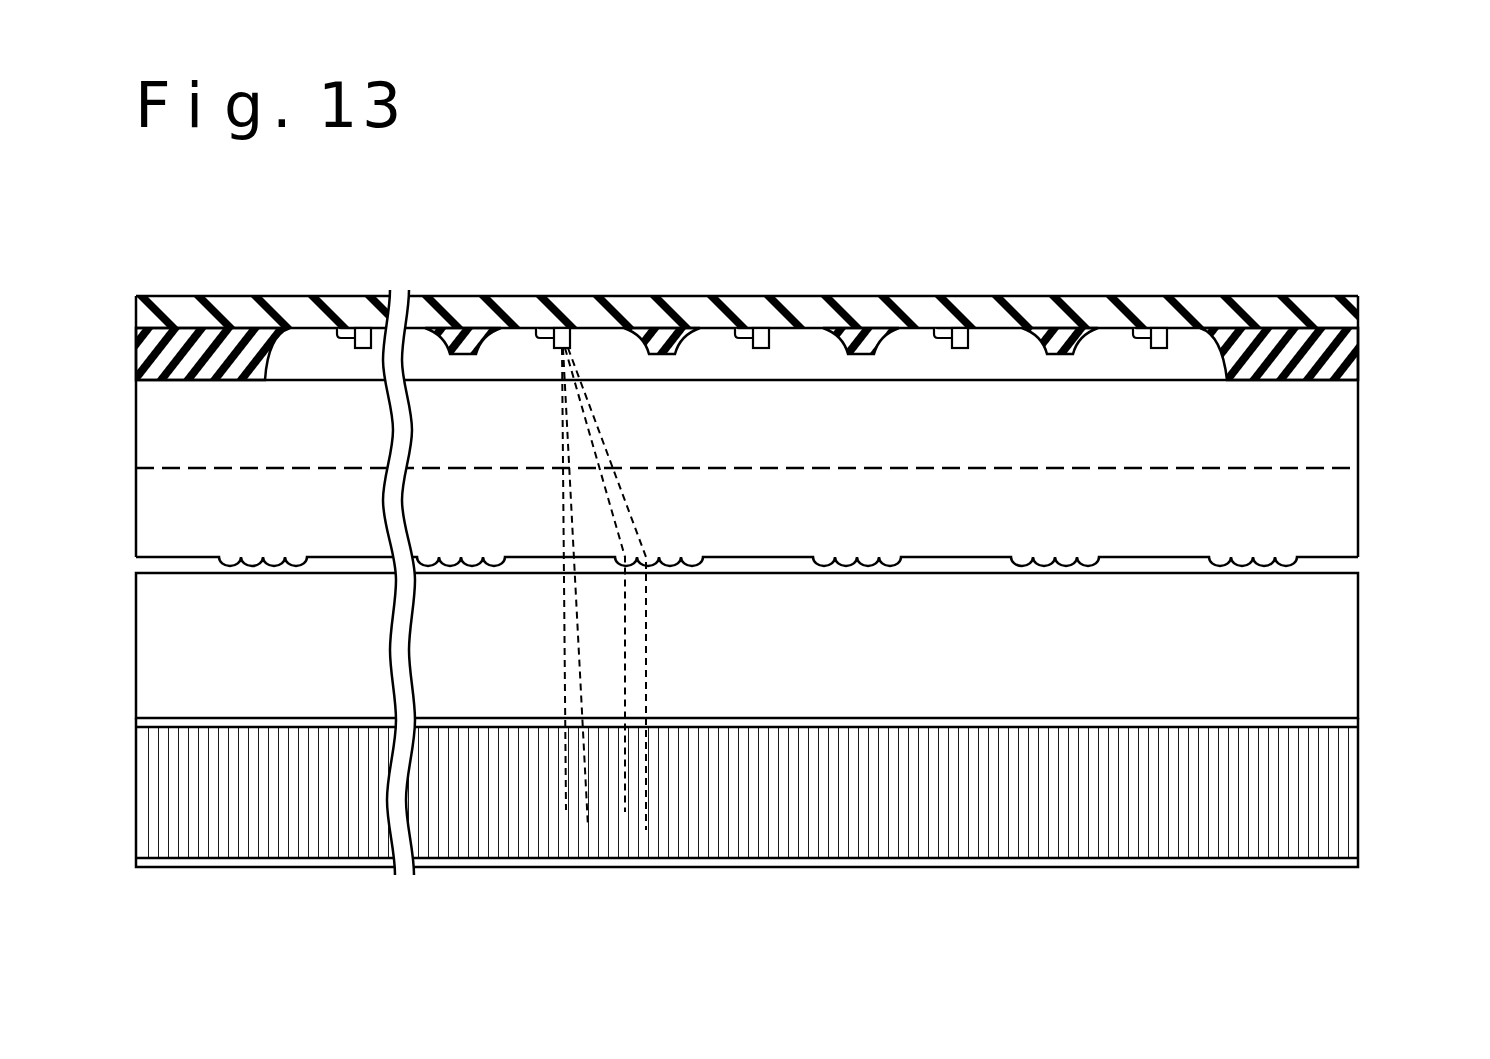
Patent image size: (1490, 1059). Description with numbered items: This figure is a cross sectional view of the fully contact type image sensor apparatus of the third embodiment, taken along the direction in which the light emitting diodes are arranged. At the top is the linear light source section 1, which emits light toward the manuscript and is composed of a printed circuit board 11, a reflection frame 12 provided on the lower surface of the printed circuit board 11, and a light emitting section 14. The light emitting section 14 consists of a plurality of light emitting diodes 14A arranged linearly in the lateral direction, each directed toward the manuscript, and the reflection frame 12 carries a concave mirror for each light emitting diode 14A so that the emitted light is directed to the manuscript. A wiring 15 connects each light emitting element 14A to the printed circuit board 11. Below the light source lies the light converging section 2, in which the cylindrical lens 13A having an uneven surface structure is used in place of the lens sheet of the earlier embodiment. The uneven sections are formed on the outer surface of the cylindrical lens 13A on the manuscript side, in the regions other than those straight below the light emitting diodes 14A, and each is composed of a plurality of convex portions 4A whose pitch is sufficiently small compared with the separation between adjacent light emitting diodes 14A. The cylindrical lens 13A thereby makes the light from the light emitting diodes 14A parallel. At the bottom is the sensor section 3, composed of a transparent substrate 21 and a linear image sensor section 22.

The linear light source section 1 is at (807, 530).
The printed circuit board 11 is at (1352, 310).
The reflection frame 12 is at (1352, 358).
The cylindrical lens 13A is at (792, 476).
The light emitting section 14 is at (556, 318).
The light emitting diode 14A is at (1170, 332).
The wiring 15 is at (906, 322).
The light converging section 2 is at (809, 435).
The sensor section 3 is at (809, 720).
The convex portion 4A is at (1296, 554).
The transparent substrate 21 is at (1355, 652).
The linear image sensor section 22 is at (785, 787).